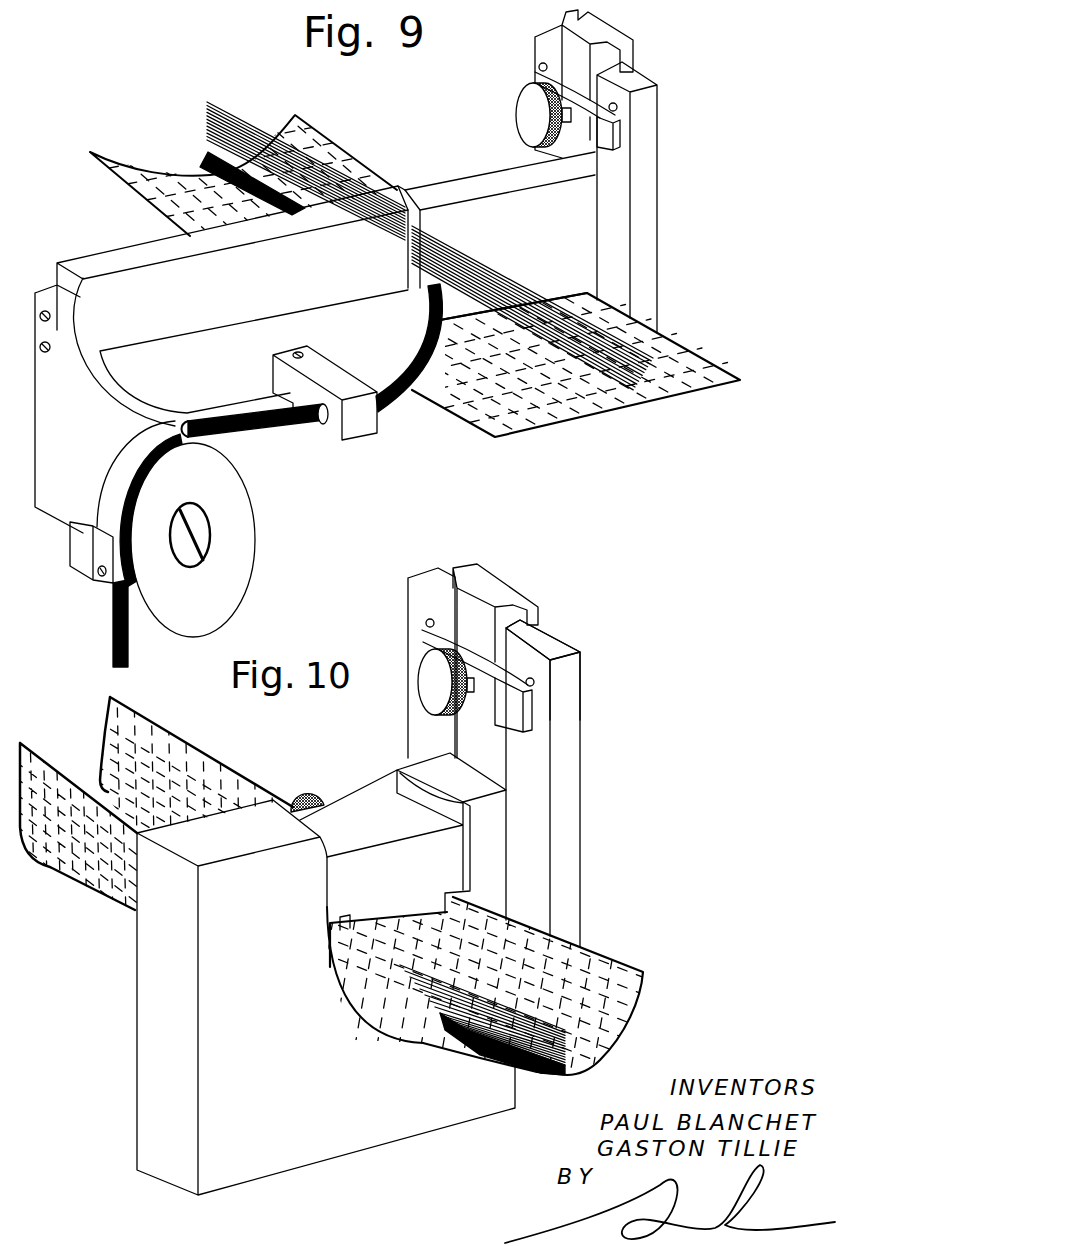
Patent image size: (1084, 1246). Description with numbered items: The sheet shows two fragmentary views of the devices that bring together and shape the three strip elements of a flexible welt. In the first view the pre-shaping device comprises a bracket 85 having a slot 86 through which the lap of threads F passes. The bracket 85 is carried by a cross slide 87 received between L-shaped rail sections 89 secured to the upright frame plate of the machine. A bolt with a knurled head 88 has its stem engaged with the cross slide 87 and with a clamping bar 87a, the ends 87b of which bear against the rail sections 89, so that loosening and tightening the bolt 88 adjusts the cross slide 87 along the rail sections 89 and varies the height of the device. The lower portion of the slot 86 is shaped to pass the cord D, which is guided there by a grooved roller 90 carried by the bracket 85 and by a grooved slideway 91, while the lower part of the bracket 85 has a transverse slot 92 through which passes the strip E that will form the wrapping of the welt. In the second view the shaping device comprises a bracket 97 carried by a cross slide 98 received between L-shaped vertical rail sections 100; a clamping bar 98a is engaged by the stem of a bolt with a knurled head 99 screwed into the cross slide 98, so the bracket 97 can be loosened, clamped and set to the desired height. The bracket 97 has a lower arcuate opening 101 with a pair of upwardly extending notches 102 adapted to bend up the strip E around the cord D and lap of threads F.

In FIG. 9, the bracket 85 is at (112, 296).
In FIG. 9, the slot 86 is at (410, 197).
In FIG. 9, the cross slide 87 is at (602, 40).
In FIG. 9, the clamping bar 87a is at (598, 113).
In FIG. 9, the ends of the clamping bar 87b is at (617, 137).
In FIG. 9, the knurled head bolt 88 is at (530, 115).
In FIG. 9, the L-shaped rail sections 89 is at (642, 132).
In FIG. 9, the grooved roller 90 is at (233, 558).
In FIG. 9, the grooved slideway 91 is at (383, 337).
In FIG. 9, the transverse slot 92 is at (587, 290).
In FIG. 10, the bracket 97 is at (253, 965).
In FIG. 10, the cross slide 98 is at (495, 593).
In FIG. 10, the clamping bar 98a is at (512, 715).
In FIG. 10, the knurled head bolt 99 is at (440, 683).
In FIG. 10, the L-shaped vertical rail sections 100 is at (423, 597).
In FIG. 10, the lower arcuate opening 101 is at (403, 1057).
In FIG. 10, the upwardly extending notches 102 is at (463, 887).
In FIG. 9, the cord D is at (208, 163).
In FIG. 10, the cord D is at (567, 1073).
In FIG. 9, the strip E is at (165, 203).
In FIG. 10, the strip E is at (240, 777).
In FIG. 9, the lap of threads F is at (233, 130).
In FIG. 10, the lap of threads F is at (532, 1027).